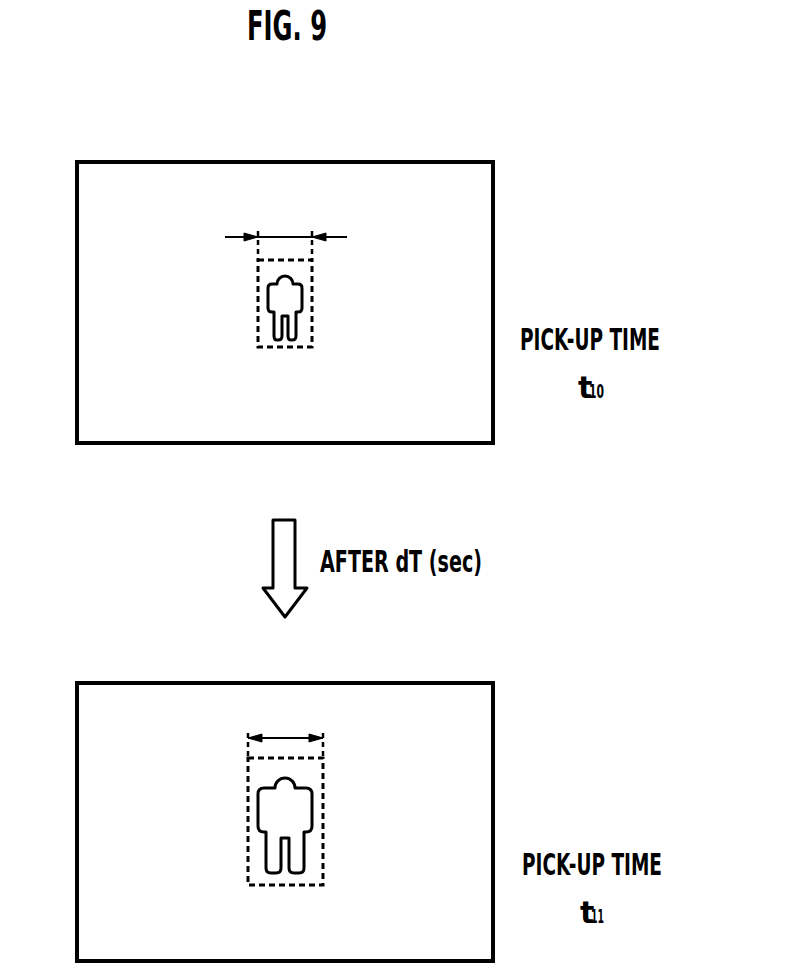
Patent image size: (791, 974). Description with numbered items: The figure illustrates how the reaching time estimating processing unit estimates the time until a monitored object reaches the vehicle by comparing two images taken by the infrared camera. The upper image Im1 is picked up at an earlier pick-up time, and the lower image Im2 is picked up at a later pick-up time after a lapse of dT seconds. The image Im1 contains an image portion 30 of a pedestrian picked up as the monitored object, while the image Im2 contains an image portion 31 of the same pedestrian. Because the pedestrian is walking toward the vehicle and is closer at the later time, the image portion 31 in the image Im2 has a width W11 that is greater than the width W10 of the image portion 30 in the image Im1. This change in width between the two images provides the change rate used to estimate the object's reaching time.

The image Im1 is at (402, 162).
The image Im2 is at (402, 683).
The image portion 30 is at (314, 325).
The image portion 31 is at (325, 852).
The width W10 is at (286, 234).
The width W11 is at (285, 733).